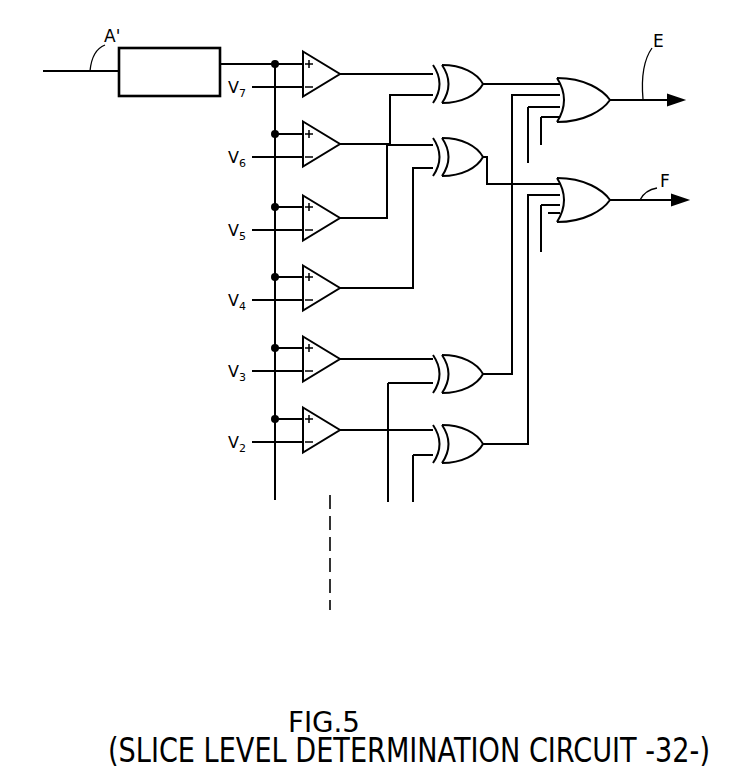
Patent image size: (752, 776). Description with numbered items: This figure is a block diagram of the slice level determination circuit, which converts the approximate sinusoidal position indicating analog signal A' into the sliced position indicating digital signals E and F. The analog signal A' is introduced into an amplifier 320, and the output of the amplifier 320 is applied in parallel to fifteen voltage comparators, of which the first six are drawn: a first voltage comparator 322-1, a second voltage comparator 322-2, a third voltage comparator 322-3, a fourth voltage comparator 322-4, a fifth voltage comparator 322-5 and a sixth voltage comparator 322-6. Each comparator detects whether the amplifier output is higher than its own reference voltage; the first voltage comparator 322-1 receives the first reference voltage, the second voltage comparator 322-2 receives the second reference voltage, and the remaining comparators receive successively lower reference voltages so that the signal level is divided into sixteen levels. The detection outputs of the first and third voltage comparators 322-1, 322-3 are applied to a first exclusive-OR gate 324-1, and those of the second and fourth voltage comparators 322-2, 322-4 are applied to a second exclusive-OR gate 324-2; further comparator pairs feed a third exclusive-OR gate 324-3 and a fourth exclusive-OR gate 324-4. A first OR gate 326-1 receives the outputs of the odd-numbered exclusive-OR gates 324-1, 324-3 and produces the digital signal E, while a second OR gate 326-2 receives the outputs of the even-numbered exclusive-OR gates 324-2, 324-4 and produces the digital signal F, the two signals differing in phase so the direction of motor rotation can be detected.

The amplifier 320 is at (170, 96).
The first voltage comparator 322-1 is at (318, 65).
The second voltage comparator 322-2 is at (318, 137).
The third voltage comparator 322-3 is at (318, 210).
The fourth voltage comparator 322-4 is at (318, 282).
The fifth voltage comparator 322-5 is at (317, 357).
The sixth voltage comparator 322-6 is at (318, 420).
The first exclusive-OR gate 324-1 is at (462, 78).
The second exclusive-OR gate 324-2 is at (455, 163).
The third exclusive-OR gate 324-3 is at (452, 363).
The fourth exclusive-OR gate 324-4 is at (457, 447).
The first OR gate 326-1 is at (565, 83).
The second OR gate 326-2 is at (588, 187).